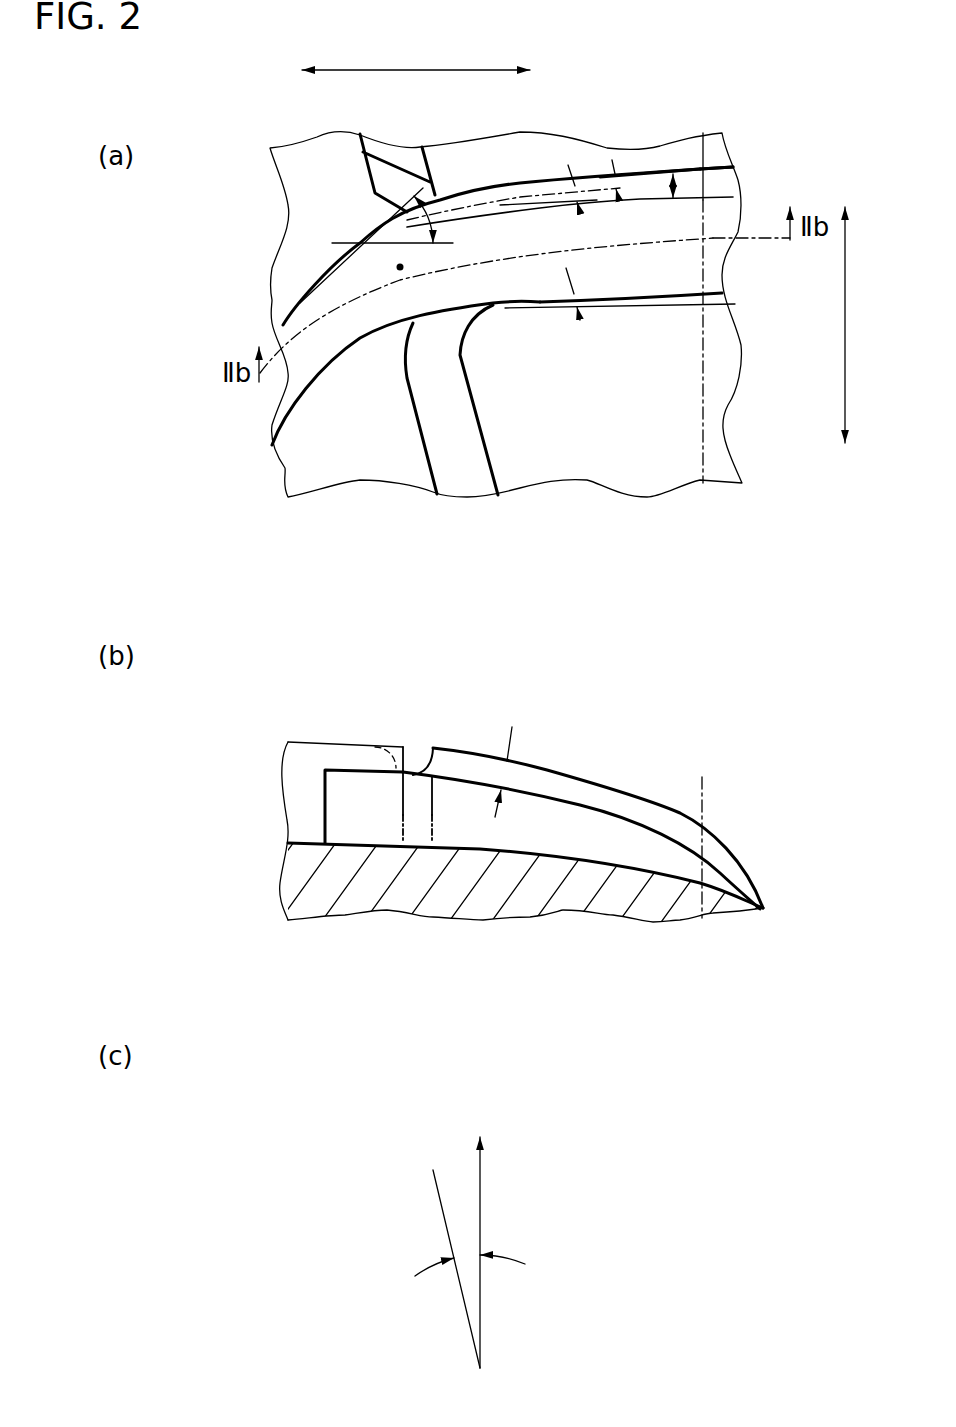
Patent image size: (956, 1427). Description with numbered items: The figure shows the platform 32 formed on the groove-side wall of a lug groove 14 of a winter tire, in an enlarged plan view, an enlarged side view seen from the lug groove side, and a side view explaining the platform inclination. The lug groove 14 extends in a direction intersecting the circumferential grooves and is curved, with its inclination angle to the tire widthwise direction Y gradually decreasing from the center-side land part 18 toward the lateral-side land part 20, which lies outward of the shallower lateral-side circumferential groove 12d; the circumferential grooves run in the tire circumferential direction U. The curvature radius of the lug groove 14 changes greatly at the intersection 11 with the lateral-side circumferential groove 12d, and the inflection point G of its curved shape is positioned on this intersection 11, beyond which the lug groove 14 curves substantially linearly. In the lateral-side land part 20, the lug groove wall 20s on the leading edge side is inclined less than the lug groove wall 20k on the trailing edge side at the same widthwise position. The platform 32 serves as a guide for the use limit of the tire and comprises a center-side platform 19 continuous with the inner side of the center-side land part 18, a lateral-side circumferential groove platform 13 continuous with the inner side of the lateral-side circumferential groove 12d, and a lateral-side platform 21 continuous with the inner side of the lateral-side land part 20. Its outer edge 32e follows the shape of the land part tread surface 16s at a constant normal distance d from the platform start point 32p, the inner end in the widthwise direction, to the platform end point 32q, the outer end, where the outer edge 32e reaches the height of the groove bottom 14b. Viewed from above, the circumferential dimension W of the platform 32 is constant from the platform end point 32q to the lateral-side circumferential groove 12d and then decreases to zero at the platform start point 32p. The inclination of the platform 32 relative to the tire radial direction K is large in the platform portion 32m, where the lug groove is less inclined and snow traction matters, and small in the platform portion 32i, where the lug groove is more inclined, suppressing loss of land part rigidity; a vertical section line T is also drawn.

The intersection 11 is at (388, 351).
The lateral-side circumferential groove 12d is at (392, 150).
The lateral-side circumferential groove platform 13 is at (420, 827).
The lug groove 14 is at (690, 268).
The groove bottom 14b is at (578, 853).
The land part tread surface 16s is at (568, 771).
The center-side land part 18 is at (337, 742).
The center-side platform 19 is at (360, 827).
The lateral-side land part 20 is at (560, 143).
The lug groove wall on trailing edge side 20k is at (657, 294).
The lug groove wall on leading edge side 20s is at (652, 174).
The lateral-side platform 21 is at (477, 827).
The platform 32 is at (503, 212).
The outer edge 32e is at (632, 820).
The platform portion 32i is at (373, 240).
The platform portion 32m is at (730, 182).
The platform start point 32p is at (400, 267).
The platform end point 32q is at (750, 880).
The reference line T is at (714, 152).
The inflection point G is at (296, 300).
The tire radial direction K is at (482, 1202).
The tire widthwise direction Y is at (416, 54).
The tire circumferential direction U is at (857, 325).
The width W is at (689, 190).
The distance d is at (499, 772).